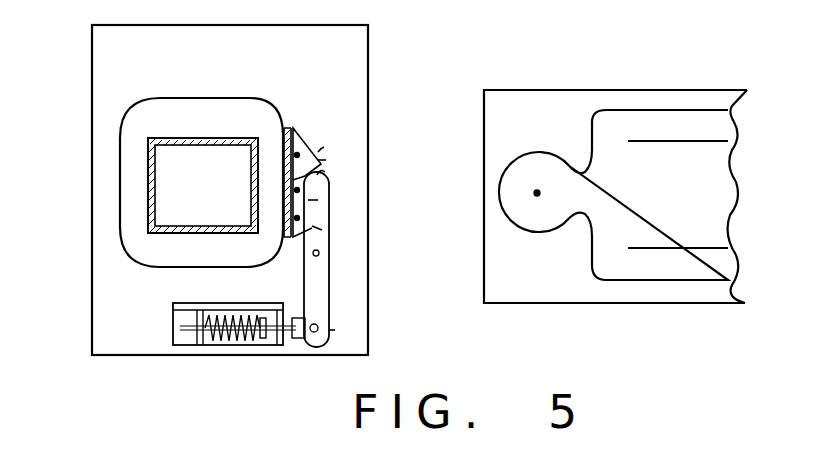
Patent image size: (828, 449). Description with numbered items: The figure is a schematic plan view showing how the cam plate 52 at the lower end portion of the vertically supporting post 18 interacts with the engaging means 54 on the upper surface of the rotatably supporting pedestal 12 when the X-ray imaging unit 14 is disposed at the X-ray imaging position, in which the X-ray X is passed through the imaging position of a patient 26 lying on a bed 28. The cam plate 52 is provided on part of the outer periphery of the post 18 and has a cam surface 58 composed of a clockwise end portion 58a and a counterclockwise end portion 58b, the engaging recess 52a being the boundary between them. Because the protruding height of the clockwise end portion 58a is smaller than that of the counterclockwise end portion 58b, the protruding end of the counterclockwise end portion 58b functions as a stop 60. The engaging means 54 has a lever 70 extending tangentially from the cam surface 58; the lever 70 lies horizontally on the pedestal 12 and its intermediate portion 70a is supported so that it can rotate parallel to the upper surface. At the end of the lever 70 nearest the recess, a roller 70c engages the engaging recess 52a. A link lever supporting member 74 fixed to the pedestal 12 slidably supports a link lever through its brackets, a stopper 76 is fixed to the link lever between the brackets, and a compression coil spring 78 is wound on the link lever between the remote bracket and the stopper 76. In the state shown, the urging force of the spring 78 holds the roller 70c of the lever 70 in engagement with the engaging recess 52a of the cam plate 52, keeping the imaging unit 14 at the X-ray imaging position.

The rotatably supporting pedestal 12 is at (345, 31).
The X-ray imaging unit 14 is at (105, 190).
The vertically supporting post 18 is at (203, 138).
The patient 26 is at (676, 270).
The bed 28 is at (565, 297).
The cam plate 52 is at (312, 142).
The engaging recess 52a is at (325, 160).
The engaging means 54 is at (336, 330).
The cam surface 58 is at (323, 150).
The clockwise end portion 58a is at (330, 228).
The counterclockwise end portion 58b is at (300, 128).
The stop 60 is at (325, 172).
The lever 70 is at (330, 290).
The intermediate portion 70a is at (320, 254).
The roller 70c is at (325, 200).
The link lever supporting member 74 is at (243, 303).
The stopper 76 is at (268, 345).
The compression coil spring 78 is at (228, 345).
The X-ray X is at (537, 190).